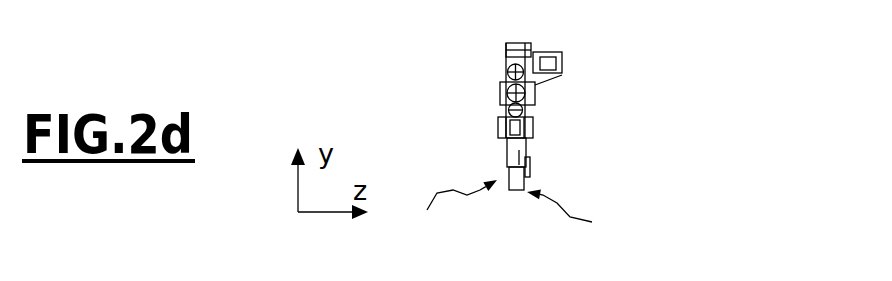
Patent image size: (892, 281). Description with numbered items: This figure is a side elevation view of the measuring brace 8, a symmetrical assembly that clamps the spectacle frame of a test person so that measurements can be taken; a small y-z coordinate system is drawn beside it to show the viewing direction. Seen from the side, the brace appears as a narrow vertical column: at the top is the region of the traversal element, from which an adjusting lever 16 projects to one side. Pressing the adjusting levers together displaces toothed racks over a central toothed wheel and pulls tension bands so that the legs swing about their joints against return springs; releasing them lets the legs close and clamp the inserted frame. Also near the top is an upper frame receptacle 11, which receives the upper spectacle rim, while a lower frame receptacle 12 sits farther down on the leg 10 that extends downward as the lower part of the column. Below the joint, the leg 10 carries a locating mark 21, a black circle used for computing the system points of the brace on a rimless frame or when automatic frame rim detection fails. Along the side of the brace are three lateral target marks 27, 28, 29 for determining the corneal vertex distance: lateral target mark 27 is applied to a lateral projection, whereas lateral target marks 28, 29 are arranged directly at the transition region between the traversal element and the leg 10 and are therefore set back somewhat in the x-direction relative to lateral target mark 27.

The measuring brace 8 is at (574, 216).
The leg 10 is at (457, 210).
The upper frame receptacle 11 is at (601, 90).
The lower frame receptacle 12 is at (603, 160).
The adjusting lever 16 is at (615, 53).
The locating mark 21 is at (608, 193).
The lateral target mark 27 is at (444, 51).
The lateral target mark 28 is at (446, 83).
The lateral target mark 29 is at (445, 119).